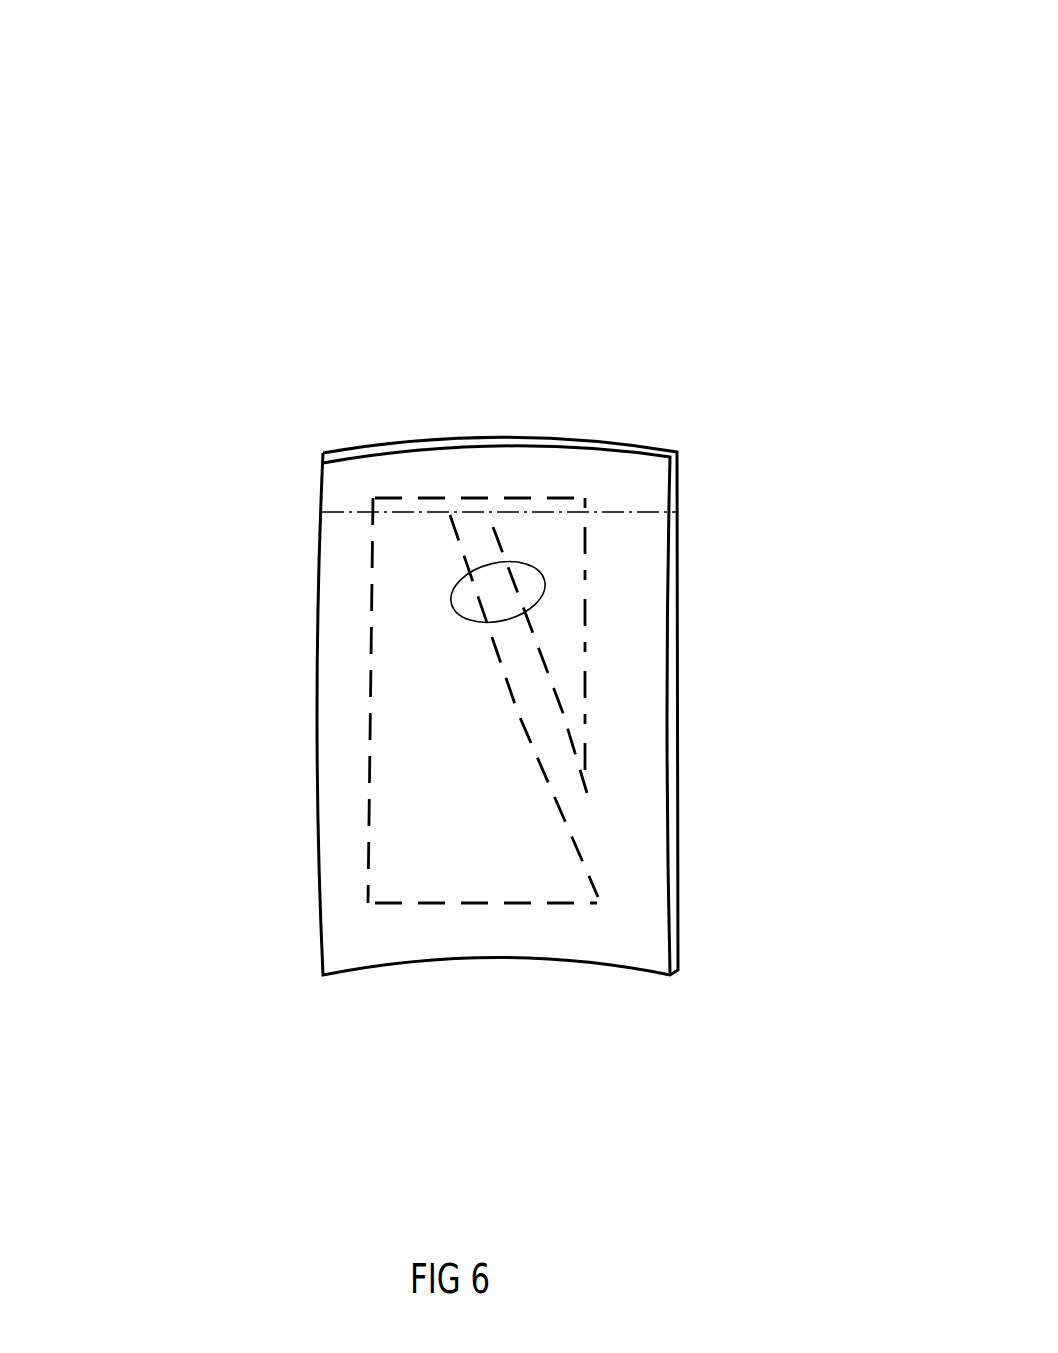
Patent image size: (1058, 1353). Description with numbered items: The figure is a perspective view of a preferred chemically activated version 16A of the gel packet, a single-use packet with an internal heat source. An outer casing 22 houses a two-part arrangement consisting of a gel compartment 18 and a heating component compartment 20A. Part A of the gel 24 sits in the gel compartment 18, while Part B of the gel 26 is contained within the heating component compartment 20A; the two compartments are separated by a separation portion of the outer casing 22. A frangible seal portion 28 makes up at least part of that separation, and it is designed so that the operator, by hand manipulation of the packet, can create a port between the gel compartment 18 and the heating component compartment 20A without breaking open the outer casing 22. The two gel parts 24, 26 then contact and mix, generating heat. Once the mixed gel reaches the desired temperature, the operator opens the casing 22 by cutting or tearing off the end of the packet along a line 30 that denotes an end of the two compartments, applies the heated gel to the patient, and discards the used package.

The chemically activated version of the gel packet 16A is at (633, 287).
The gel compartment 18 is at (387, 838).
The heating component compartment 20A is at (570, 697).
The outer casing 22 is at (620, 953).
The Part A of the gel 24 is at (423, 687).
The Part B of the gel 26 is at (563, 623).
The frangible seal portion 28 is at (450, 607).
The line 30 is at (625, 513).